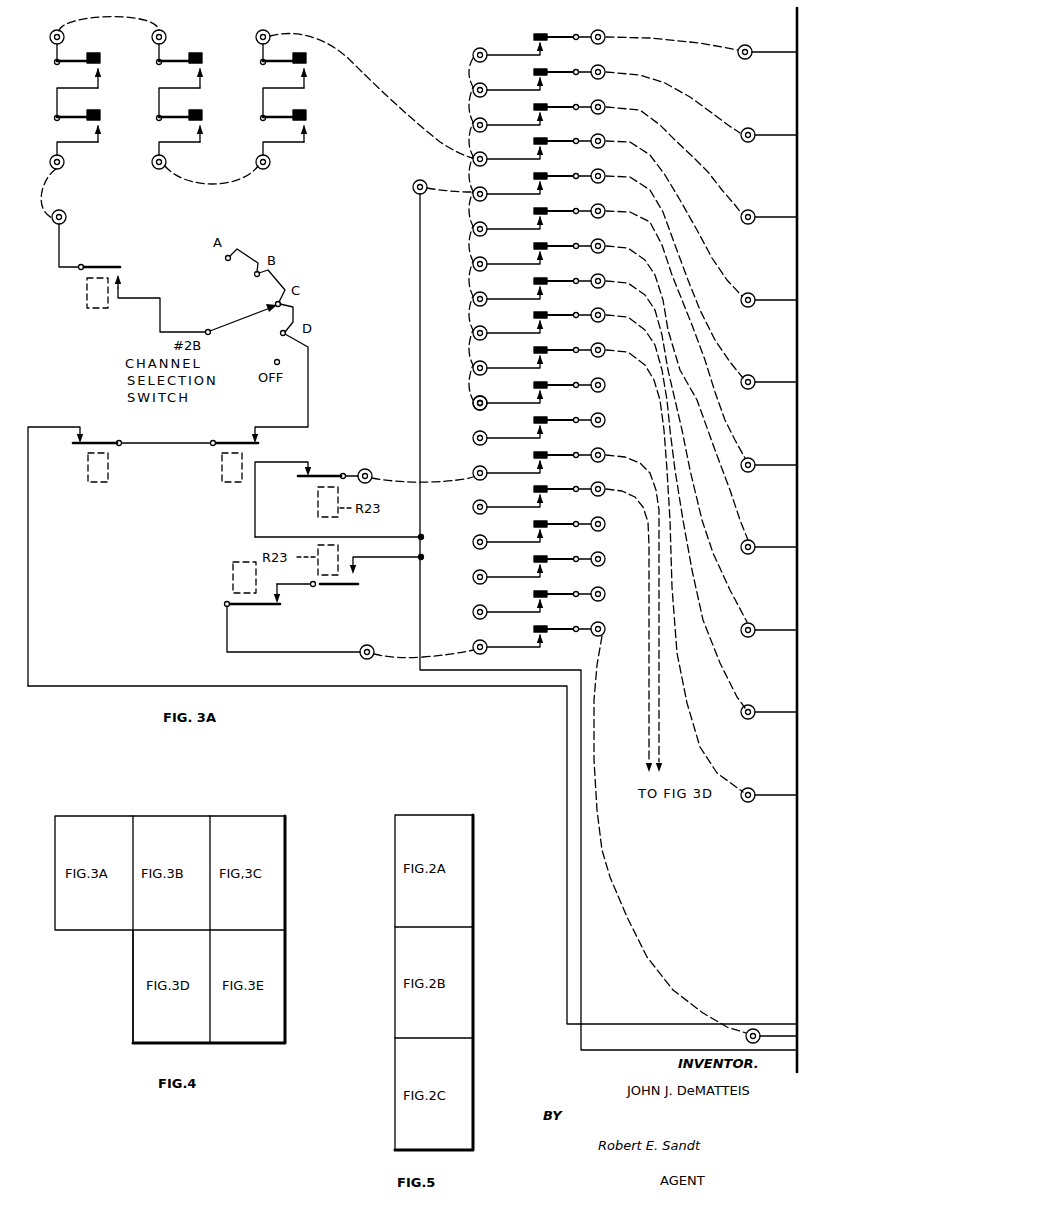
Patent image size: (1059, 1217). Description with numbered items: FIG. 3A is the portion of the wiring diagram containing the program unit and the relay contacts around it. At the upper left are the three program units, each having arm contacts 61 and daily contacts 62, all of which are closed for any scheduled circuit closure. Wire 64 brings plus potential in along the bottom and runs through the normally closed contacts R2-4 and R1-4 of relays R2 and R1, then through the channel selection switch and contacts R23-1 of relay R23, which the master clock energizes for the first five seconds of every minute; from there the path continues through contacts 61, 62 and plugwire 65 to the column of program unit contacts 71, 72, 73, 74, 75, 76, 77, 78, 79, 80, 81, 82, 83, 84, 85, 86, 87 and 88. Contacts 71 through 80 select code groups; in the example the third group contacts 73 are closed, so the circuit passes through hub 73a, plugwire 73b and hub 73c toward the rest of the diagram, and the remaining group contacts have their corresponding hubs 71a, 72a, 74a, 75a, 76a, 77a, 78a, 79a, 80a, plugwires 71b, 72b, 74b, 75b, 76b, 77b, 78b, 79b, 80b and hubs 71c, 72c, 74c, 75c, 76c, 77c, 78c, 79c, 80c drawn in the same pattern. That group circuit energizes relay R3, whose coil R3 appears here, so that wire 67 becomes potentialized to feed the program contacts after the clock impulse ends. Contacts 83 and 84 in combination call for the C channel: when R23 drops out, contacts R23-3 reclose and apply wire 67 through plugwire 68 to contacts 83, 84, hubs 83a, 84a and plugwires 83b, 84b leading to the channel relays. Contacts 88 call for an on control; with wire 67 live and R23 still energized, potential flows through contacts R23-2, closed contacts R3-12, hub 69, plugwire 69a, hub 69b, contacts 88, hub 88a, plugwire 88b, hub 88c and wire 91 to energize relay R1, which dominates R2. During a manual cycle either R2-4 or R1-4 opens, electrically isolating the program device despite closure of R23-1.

The arm contacts 61 is at (92, 122).
The daily contacts 62 is at (92, 69).
The wire 64 is at (148, 673).
The plugwire 65 is at (436, 113).
The wire 67 is at (422, 300).
The plugwire 68 is at (383, 478).
The hub 69 is at (362, 657).
The plugwire 69a is at (416, 640).
The hub 69b is at (482, 646).
The program unit group contacts 71 is at (532, 42).
The program unit group contacts 72 is at (532, 77).
The program unit group contacts 73 is at (532, 112).
The program unit group contacts 74 is at (532, 146).
The program unit group contacts 75 is at (532, 181).
The program unit group contacts 76 is at (532, 216).
The program unit group contacts 77 is at (532, 251).
The program unit group contacts 78 is at (532, 286).
The program unit group contacts 79 is at (532, 320).
The program unit group contacts 80 is at (532, 355).
The relay contact 81 is at (532, 390).
The relay contact 82 is at (532, 425).
The channel selection contacts 83 is at (532, 460).
The channel selection contacts 84 is at (532, 494).
The relay contact 85 is at (532, 529).
The relay contact 86 is at (532, 564).
The relay contact 87 is at (532, 599).
The on contacts 88 is at (532, 634).
The terminal 71a is at (601, 32).
The terminal 72a is at (601, 67).
The hub 73a is at (601, 102).
The terminal 74a is at (601, 136).
The terminal 75a is at (601, 171).
The terminal 76a is at (609, 200).
The terminal 77a is at (609, 235).
The terminal 78a is at (609, 270).
The terminal 79a is at (609, 304).
The terminal 80a is at (609, 339).
The hub 83a is at (601, 450).
The hub 84a is at (609, 478).
The hub 88a is at (609, 618).
The conductor 71b is at (668, 40).
The conductor 72b is at (658, 86).
The plugwire 73b is at (690, 136).
The conductor 74b is at (685, 180).
The conductor 75b is at (669, 228).
The conductor 76b is at (704, 348).
The conductor 77b is at (719, 475).
The conductor 78b is at (676, 451).
The conductor 79b is at (675, 511).
The conductor 80b is at (674, 571).
The plugwire 83b is at (659, 738).
The plugwire 84b is at (647, 726).
The plugwire 88b is at (628, 917).
The terminal 71c is at (750, 47).
The terminal 72c is at (753, 130).
The hub 73c is at (753, 212).
The terminal 74c is at (753, 295).
The terminal 75c is at (753, 377).
The terminal 76c is at (753, 460).
The terminal 77c is at (753, 542).
The terminal 78c is at (753, 625).
The terminal 79c is at (753, 707).
The terminal 80c is at (753, 790).
The hub 88c is at (762, 1014).
The wire 91 is at (783, 1034).
The relay contacts R23-1 is at (123, 270).
The relay R23 is at (87, 289).
The relay contacts R2-4 is at (85, 442).
The relay contacts R1-4 is at (247, 440).
The relay R2 is at (90, 468).
The relay R1 is at (222, 470).
The relay contacts R23-3 is at (328, 467).
The relay contacts R23-2 is at (378, 580).
The relay contacts R3-12 is at (295, 593).
The relay coil R3 is at (233, 583).